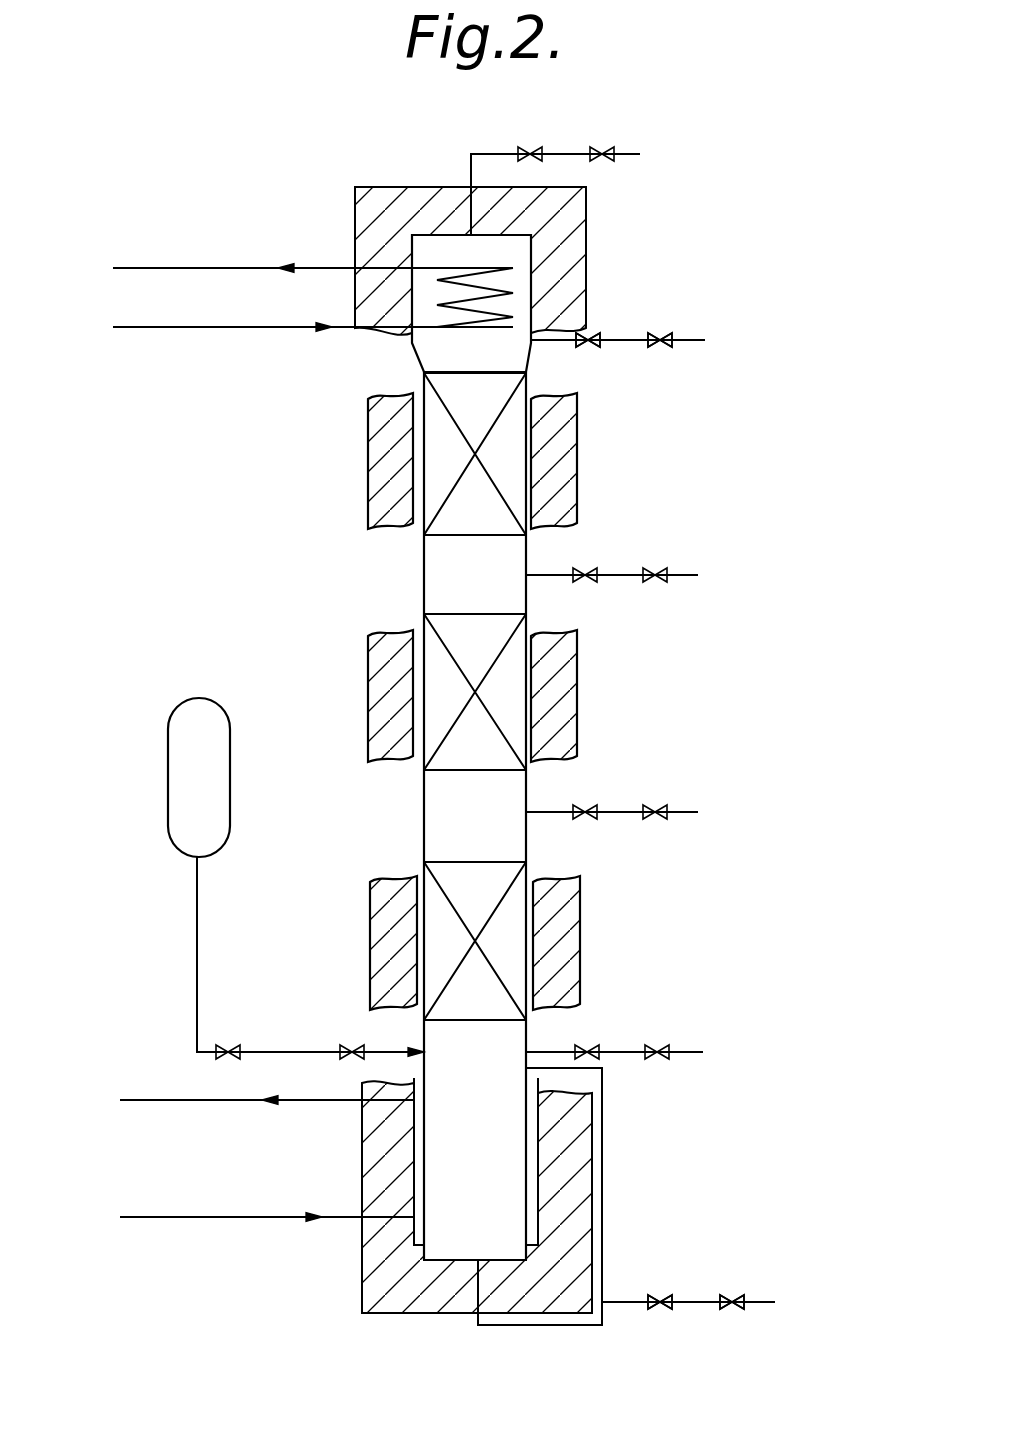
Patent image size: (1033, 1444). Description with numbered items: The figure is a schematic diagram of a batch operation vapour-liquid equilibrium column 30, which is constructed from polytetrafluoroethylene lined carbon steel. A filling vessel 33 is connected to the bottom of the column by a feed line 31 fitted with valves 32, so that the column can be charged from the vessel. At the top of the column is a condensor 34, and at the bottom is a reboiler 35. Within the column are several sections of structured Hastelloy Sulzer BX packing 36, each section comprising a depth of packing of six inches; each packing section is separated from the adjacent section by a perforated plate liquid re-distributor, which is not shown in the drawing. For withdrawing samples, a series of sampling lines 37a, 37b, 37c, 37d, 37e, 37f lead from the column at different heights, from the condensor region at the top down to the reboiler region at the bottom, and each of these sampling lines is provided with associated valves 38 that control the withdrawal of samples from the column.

The vapour-liquid equilibrium column 30 is at (642, 696).
The feed line 31 is at (197, 946).
The valves 32 is at (350, 1050).
The filling vessel 33 is at (168, 730).
The condensor 34 is at (503, 287).
The reboiler 35 is at (537, 1160).
The structured Hastelloy Sulzer BX packing 36 is at (508, 408).
The sampling line 37a is at (632, 152).
The sampling line 37b is at (690, 340).
The sampling line 37c is at (683, 575).
The sampling line 37d is at (683, 812).
The sampling line 37e is at (684, 1052).
The sampling line 37f is at (768, 1302).
The valves 38 is at (655, 338).